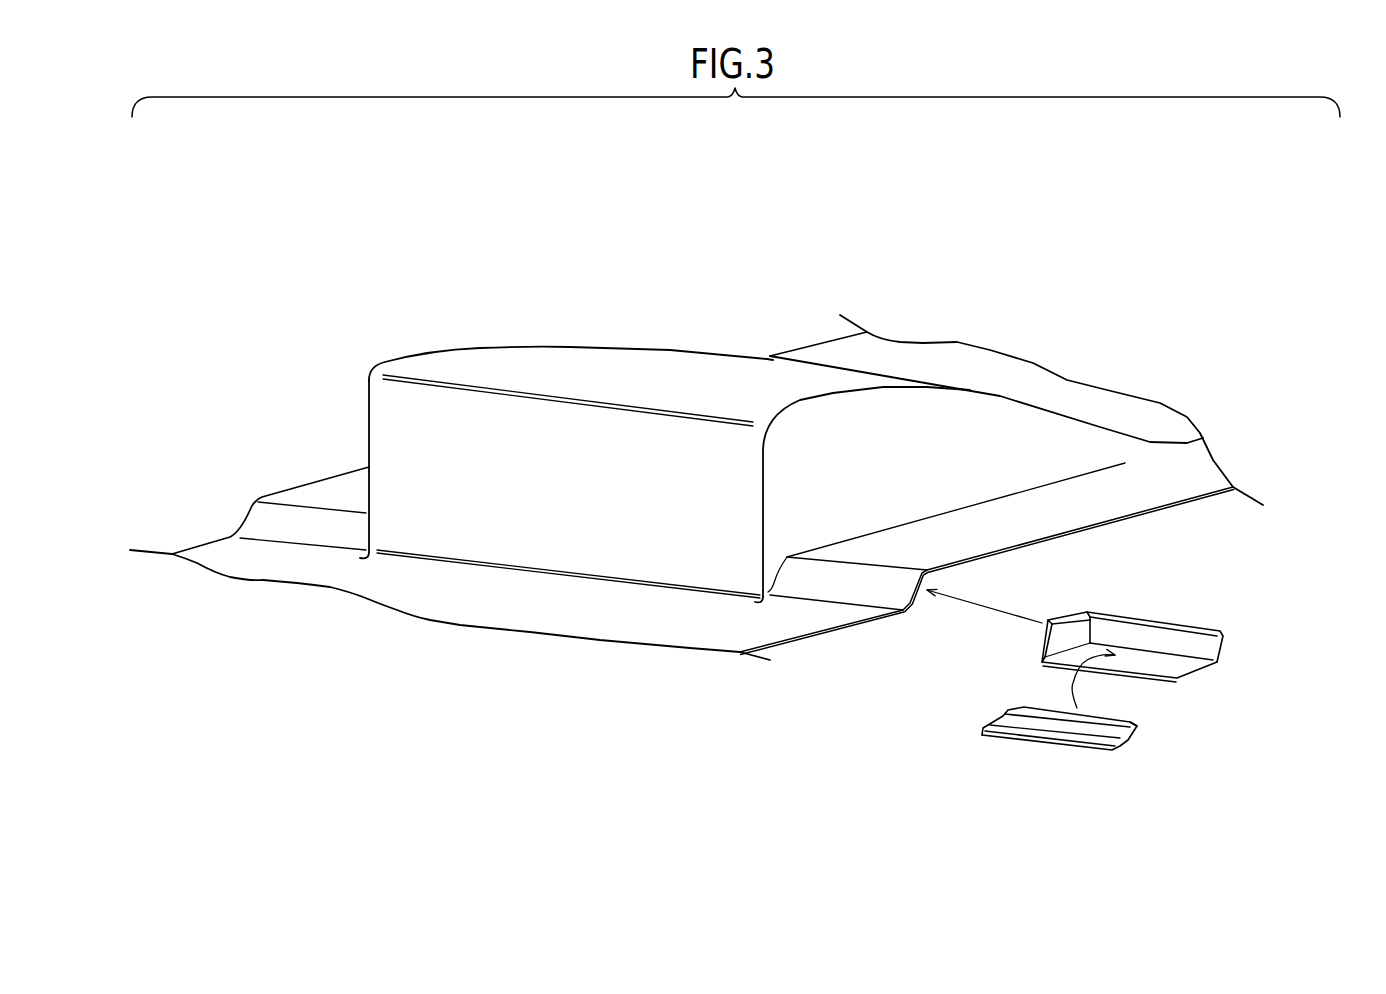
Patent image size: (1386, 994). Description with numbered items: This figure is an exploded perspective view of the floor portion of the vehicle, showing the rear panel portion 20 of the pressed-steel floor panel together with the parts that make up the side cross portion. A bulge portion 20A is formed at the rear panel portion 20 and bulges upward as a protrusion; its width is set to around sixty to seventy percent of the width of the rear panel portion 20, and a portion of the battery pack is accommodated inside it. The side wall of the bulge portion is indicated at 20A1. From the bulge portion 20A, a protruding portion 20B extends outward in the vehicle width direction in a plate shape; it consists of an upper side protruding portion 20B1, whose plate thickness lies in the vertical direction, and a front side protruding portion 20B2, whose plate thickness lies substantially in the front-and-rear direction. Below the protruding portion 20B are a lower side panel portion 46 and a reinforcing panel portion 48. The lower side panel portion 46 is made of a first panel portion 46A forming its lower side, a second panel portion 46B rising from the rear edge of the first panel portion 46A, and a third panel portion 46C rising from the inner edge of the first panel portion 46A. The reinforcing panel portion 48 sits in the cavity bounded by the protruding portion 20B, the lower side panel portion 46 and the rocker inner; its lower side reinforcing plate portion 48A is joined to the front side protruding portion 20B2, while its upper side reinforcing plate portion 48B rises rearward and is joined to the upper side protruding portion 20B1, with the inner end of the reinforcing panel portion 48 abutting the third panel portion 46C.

The rear panel portion 20 is at (667, 263).
The bulge portion 20A is at (528, 342).
The side wall of raised portion 20A1 is at (1023, 425).
The protruding portion 20B is at (1080, 508).
The upper side protruding portion 20B1 is at (995, 528).
The front side protruding portion 20B2 is at (860, 585).
The lower side panel portion 46 is at (1131, 665).
The first panel portion 46A is at (1153, 647).
The second panel portion 46B is at (1220, 662).
The third panel portion 46C is at (1050, 640).
The reinforcing panel portion 48 is at (1072, 779).
The lower side reinforcing plate portion 48A is at (1116, 748).
The upper side reinforcing plate portion 48B is at (1023, 720).